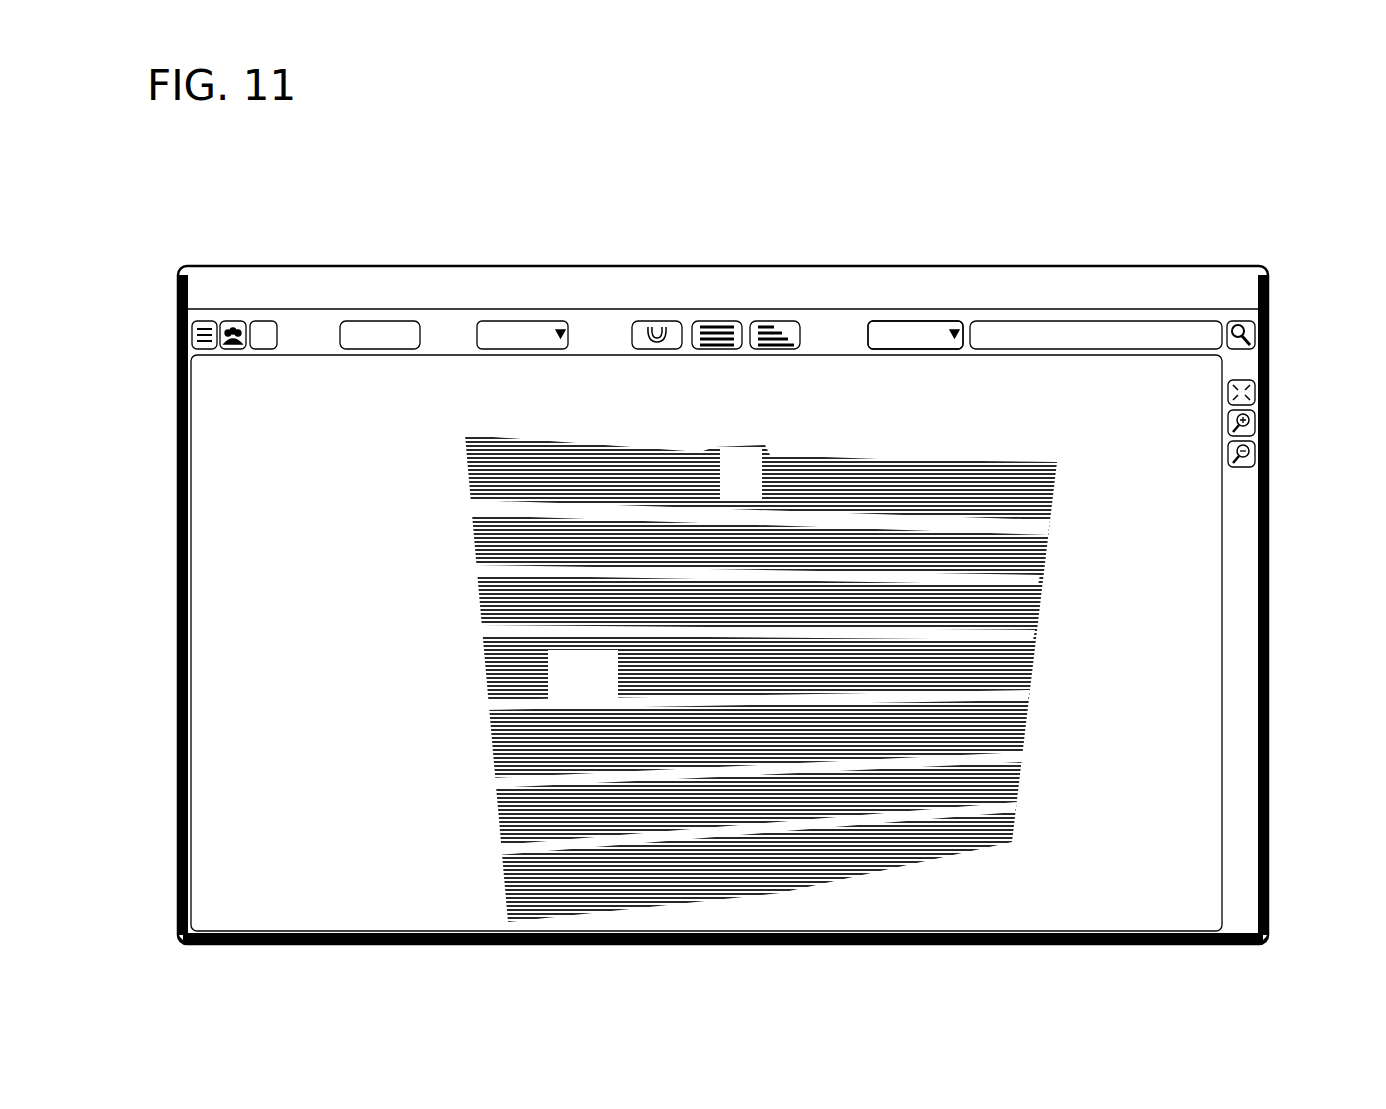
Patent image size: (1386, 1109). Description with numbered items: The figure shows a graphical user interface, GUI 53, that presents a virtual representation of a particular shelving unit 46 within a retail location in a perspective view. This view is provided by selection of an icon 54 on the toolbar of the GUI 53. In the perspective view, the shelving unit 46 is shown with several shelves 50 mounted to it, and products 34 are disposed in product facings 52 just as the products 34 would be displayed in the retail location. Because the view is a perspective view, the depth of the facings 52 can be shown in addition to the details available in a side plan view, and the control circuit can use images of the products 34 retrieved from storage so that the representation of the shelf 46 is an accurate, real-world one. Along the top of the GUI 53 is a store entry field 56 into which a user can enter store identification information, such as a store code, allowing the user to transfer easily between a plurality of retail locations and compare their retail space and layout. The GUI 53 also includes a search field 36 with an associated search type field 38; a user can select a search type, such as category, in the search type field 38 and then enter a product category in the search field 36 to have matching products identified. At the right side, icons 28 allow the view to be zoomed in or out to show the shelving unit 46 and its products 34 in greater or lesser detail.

The GUI 53 is at (1297, 170).
The store entry field 56 is at (404, 333).
The products 34 is at (537, 432).
The icon 54 is at (782, 333).
The search type field 38 is at (921, 338).
The search field 36 is at (1043, 330).
The icons 28 is at (1268, 385).
The product facings 52 is at (476, 530).
The shelves 50 is at (1020, 662).
The shelving unit 46 is at (490, 728).